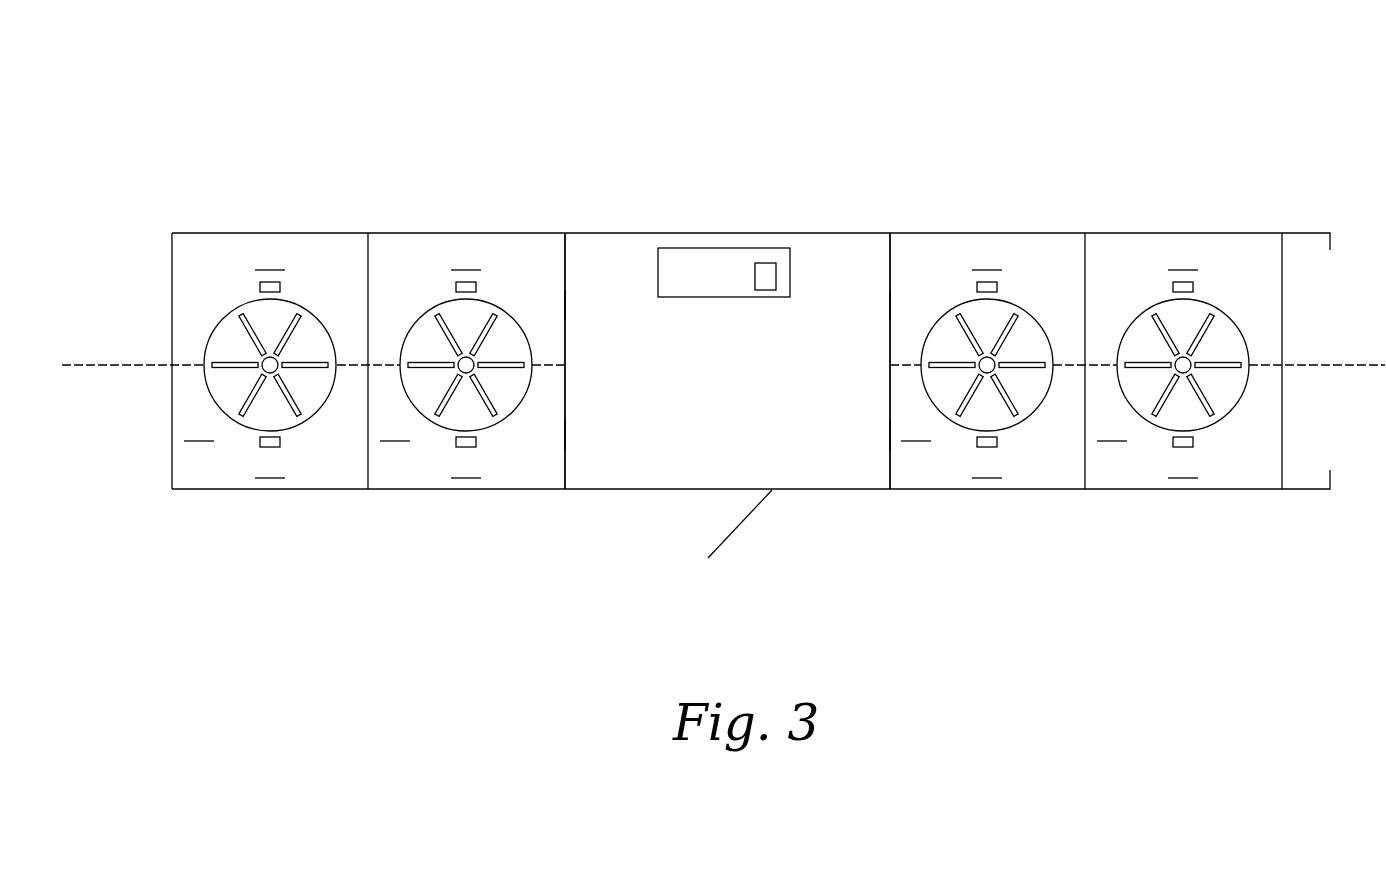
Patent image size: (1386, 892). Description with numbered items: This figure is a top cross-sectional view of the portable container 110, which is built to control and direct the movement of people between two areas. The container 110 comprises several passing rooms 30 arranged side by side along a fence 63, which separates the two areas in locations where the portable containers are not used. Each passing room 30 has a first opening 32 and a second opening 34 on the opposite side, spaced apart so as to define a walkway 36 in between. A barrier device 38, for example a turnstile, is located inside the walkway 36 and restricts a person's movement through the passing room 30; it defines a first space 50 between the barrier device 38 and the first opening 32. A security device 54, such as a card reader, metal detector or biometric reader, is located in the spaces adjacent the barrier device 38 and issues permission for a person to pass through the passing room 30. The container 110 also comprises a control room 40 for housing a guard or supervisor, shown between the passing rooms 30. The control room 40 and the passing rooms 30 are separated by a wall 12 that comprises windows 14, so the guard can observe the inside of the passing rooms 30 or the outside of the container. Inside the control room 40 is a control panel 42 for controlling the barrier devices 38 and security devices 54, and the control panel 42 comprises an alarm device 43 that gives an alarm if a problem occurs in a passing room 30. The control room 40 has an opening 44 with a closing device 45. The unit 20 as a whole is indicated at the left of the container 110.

The portable container 110 is at (366, 140).
The air handling unit 20 is at (195, 233).
The passing room 30 is at (210, 250).
The second opening 34 is at (288, 233).
The first opening 32 is at (252, 489).
The walkway 36 is at (658, 426).
The barrier device 38 is at (297, 404).
The first space 50 is at (728, 359).
The security device 54 is at (280, 287).
The control room 40 is at (608, 254).
The control panel 42 is at (702, 298).
The alarm device 43 is at (777, 281).
The opening 44 is at (696, 490).
The closing device 45 is at (735, 532).
The wall 12 is at (566, 384).
The window 14 is at (566, 302).
The fence 63 is at (117, 366).